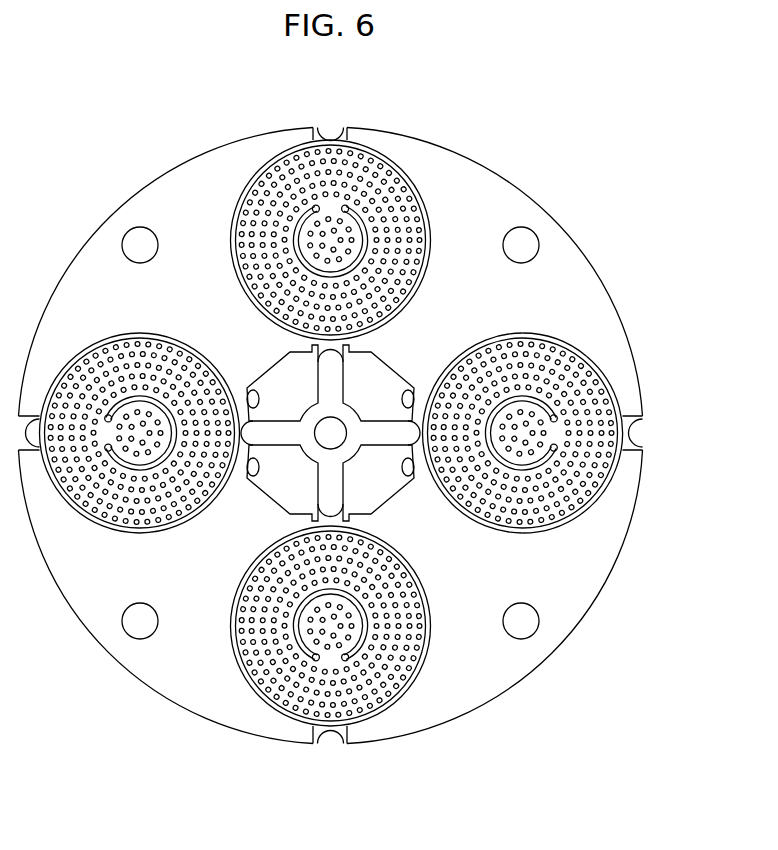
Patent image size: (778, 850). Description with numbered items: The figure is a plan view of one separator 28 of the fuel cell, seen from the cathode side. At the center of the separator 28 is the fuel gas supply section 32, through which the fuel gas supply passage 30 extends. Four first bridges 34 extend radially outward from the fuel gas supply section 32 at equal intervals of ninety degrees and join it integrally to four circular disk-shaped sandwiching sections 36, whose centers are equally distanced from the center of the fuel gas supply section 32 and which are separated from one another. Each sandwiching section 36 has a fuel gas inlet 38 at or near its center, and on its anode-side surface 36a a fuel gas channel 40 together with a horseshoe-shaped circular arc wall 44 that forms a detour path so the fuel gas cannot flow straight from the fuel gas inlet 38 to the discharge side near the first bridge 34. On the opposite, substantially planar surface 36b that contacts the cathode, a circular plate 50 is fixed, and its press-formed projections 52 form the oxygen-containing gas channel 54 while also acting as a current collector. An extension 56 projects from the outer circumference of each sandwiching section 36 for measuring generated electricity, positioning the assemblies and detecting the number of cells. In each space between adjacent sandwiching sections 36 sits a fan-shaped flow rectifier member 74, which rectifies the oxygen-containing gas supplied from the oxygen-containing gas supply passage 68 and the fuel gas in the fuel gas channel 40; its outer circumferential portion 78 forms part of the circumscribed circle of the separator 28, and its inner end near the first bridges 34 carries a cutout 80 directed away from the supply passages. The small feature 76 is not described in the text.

The separator 28 is at (586, 172).
The fuel gas supply passage 30 is at (342, 422).
The fuel gas supply section 32 is at (352, 450).
The first bridge 34 is at (286, 424).
The sandwiching section 36 is at (418, 178).
The surface of sandwiching section contacting the anode 36a is at (366, 150).
The planar surface of sandwiching section contacting the cathode 36b is at (418, 188).
The fuel gas inlet 38 is at (521, 437).
The fuel gas channel 40 is at (531, 338).
The circular arc wall 44 is at (508, 392).
The plate 50 is at (578, 340).
The projections 52 is at (600, 525).
The oxygen-containing gas channel 54 is at (592, 360).
The extension 56 is at (320, 127).
The oxygen-containing gas supply passage 68 is at (372, 500).
The flow rectifier member 74 is at (571, 237).
The locating lug 76 is at (408, 390).
The outer circumferential portion 78 is at (583, 278).
The cutout 80 is at (272, 483).